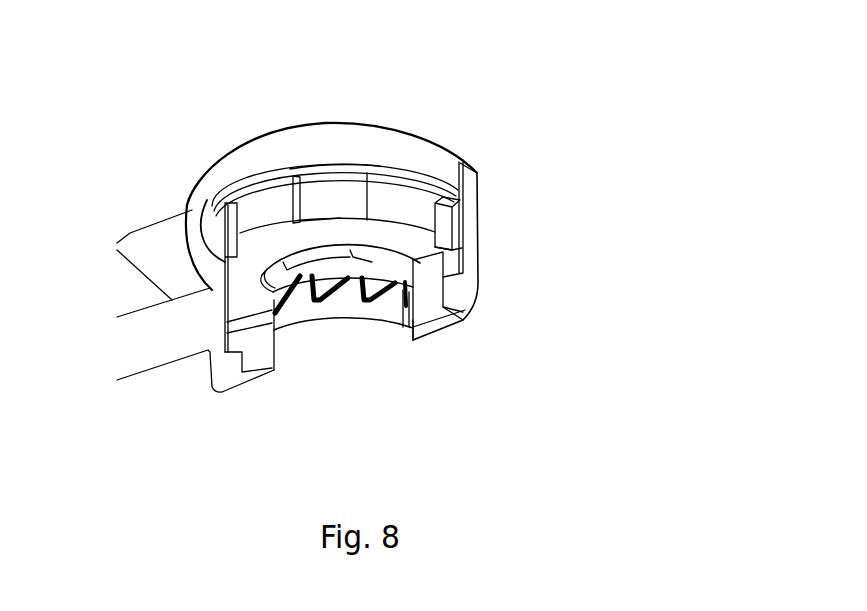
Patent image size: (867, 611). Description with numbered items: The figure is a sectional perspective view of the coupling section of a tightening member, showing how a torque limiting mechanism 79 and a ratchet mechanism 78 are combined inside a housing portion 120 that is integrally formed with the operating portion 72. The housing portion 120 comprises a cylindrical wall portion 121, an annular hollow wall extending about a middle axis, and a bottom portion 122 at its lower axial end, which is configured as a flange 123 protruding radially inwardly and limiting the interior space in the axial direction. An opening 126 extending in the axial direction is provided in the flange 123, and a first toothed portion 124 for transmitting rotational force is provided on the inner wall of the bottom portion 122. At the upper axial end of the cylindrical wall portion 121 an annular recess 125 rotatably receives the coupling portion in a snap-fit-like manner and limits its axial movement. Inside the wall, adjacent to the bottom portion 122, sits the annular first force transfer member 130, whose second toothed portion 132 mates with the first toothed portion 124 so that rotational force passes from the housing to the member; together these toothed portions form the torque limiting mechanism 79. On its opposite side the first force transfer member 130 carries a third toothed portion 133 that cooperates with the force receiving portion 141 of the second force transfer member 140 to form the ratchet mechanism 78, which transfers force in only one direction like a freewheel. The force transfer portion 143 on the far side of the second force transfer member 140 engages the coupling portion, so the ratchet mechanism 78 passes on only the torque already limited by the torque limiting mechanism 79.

The operating portion 72 is at (147, 383).
The ratchet mechanism 78 is at (628, 268).
The torque limiting mechanism 79 is at (530, 315).
The housing portion 120 is at (488, 147).
The cylindrical wall portion 121 is at (482, 217).
The bottom portion 122 is at (473, 324).
The flange 123 is at (439, 334).
The first toothed portion 124 is at (390, 309).
The annular recess 125 is at (430, 198).
The opening 126 is at (334, 344).
The first force transfer member 130 is at (440, 281).
The second toothed portion 132 is at (366, 294).
The third toothed portion 133 is at (310, 266).
The second force transfer member 140 is at (464, 247).
The force receiving portion 141 is at (316, 245).
The force transfer portion 143 is at (333, 170).